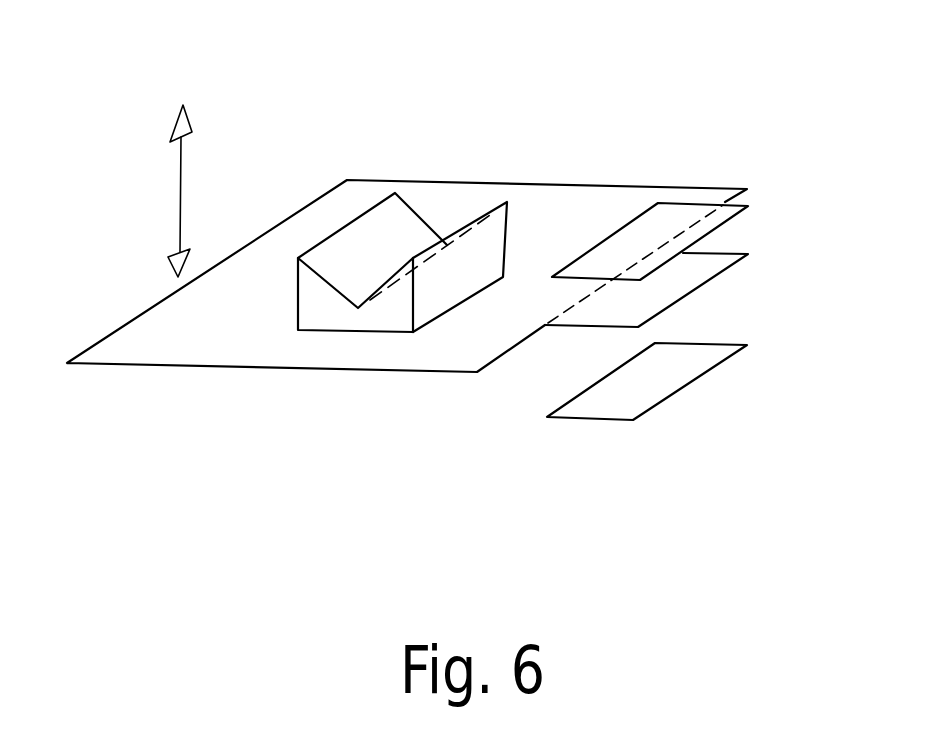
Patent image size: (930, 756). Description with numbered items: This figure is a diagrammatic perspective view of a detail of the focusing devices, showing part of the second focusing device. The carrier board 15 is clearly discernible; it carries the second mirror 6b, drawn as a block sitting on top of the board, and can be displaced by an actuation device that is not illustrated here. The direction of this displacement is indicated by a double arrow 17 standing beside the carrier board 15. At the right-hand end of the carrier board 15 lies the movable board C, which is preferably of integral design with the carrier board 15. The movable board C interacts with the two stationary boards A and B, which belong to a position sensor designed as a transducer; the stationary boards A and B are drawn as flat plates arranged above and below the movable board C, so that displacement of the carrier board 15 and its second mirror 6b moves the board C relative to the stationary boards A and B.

The carrier board 15 is at (567, 218).
The double arrow 17 is at (178, 199).
The second mirror 6b is at (367, 313).
The stationary board A is at (720, 212).
The movable board C is at (703, 265).
The stationary board B is at (698, 362).